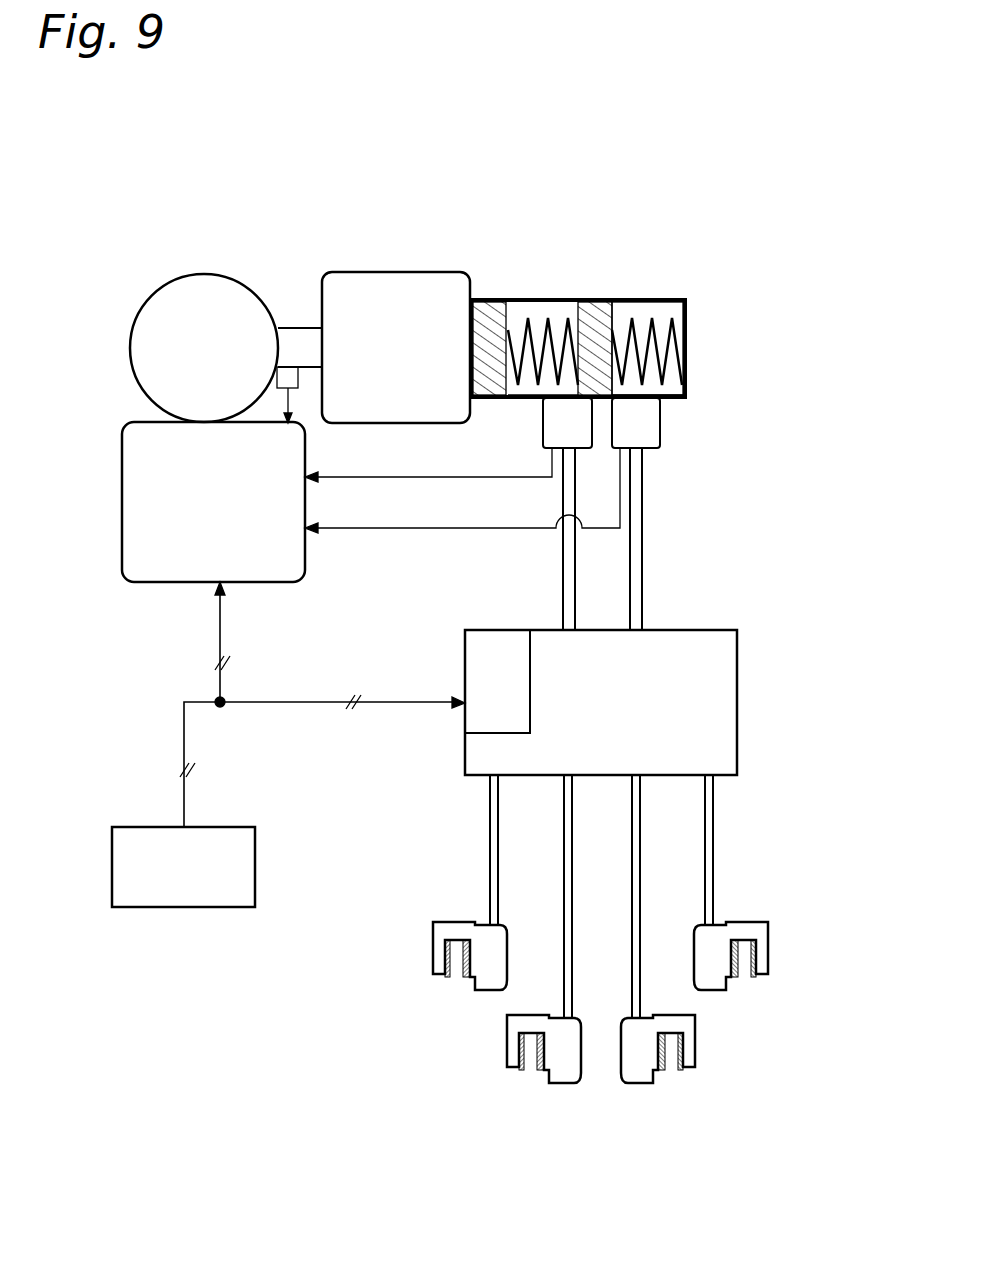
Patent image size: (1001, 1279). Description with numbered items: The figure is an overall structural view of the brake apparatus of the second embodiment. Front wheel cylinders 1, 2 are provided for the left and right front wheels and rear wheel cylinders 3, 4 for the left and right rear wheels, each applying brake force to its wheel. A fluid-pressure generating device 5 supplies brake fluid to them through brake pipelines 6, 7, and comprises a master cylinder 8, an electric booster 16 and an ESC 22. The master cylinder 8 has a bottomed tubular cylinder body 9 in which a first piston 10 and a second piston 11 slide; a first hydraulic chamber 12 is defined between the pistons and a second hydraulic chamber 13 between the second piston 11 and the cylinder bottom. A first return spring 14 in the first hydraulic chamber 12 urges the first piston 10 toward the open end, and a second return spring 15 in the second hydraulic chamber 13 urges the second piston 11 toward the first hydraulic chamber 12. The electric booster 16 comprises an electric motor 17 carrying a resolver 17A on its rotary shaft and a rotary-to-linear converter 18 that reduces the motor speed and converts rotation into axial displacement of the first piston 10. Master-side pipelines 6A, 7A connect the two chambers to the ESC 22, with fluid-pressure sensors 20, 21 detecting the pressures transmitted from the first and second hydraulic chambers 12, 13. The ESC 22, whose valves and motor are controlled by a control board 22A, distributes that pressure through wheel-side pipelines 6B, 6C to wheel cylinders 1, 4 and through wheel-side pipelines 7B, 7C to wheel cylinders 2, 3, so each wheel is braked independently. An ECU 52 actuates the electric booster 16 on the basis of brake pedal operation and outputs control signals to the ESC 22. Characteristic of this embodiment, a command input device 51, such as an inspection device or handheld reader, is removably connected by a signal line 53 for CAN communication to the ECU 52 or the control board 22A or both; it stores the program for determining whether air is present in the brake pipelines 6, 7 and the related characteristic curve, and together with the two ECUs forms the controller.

The front wheel cylinder 1 is at (438, 976).
The front wheel cylinder 2 is at (645, 1080).
The rear wheel cylinder 3 is at (772, 957).
The rear wheel cylinder 4 is at (557, 1078).
The fluid-pressure generating device 5 is at (692, 294).
The brake pipeline 6 is at (550, 590).
The master-side pipeline 6A is at (563, 553).
The wheel-side pipeline 6B is at (490, 835).
The wheel-side pipeline 6C is at (573, 905).
The brake pipeline 7 is at (655, 592).
The master-side pipeline 7A is at (643, 553).
The wheel-side pipeline 7B is at (642, 881).
The wheel-side pipeline 7C is at (715, 828).
The master cylinder 8 is at (537, 294).
The cylinder body 9 is at (627, 300).
The first piston 10 is at (489, 306).
The second piston 11 is at (590, 310).
The first hydraulic chamber 12 is at (537, 392).
The second hydraulic chamber 13 is at (686, 397).
The first return spring 14 is at (556, 318).
The second return spring 15 is at (657, 312).
The electric booster 16 is at (353, 266).
The electric motor 17 is at (191, 278).
The resolver 17A is at (302, 366).
The rotary-to-linear converter 18 is at (423, 280).
The fluid-pressure sensor 20 is at (543, 437).
The fluid-pressure sensor 21 is at (660, 437).
The ESC 22 is at (745, 660).
The control board (ECU) 22A is at (465, 673).
The command input device 51 is at (187, 896).
The ECU 52 is at (160, 573).
The signal line 53 is at (280, 705).